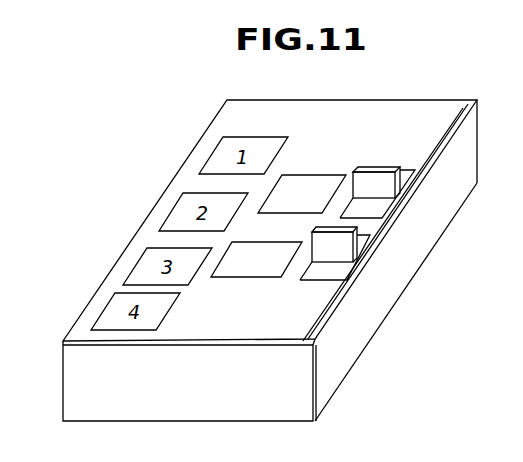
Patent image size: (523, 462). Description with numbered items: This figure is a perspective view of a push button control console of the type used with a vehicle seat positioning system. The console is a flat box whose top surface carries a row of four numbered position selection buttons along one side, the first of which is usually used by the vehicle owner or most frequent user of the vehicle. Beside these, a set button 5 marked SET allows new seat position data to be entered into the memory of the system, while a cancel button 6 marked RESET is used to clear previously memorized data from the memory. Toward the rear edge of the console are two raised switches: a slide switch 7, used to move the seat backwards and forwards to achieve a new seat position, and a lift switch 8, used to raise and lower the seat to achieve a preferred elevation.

The set button 5 is at (308, 175).
The cancel button 6 is at (233, 278).
The slide switch 7 is at (360, 167).
The lift switch 8 is at (306, 283).